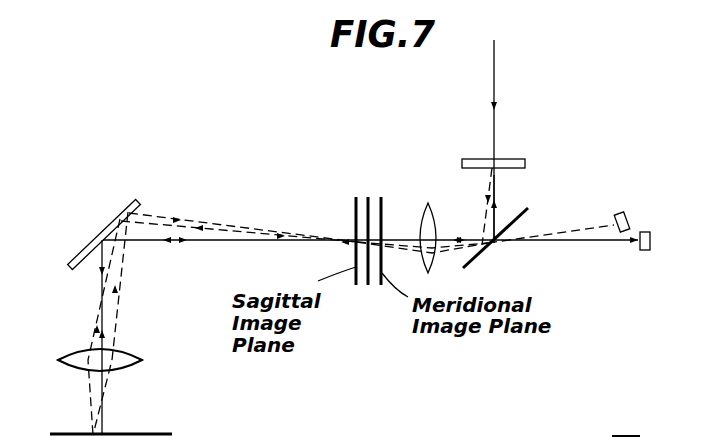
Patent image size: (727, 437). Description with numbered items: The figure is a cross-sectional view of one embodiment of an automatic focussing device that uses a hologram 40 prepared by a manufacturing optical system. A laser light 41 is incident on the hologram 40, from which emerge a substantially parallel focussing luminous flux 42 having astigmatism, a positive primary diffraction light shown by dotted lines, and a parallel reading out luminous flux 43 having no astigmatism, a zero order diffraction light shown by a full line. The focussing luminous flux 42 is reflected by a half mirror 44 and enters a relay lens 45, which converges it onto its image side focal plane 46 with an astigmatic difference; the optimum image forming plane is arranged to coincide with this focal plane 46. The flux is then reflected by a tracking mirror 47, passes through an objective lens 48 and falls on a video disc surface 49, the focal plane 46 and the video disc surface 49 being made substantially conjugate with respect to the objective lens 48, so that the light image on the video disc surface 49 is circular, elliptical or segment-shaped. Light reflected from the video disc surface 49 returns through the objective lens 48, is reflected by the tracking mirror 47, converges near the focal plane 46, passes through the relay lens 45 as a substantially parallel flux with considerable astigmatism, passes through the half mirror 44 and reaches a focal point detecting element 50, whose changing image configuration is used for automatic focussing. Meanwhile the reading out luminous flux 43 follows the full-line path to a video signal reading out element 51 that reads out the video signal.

The hologram 40 is at (521, 158).
The laser light 41 is at (495, 72).
The focussing luminous flux 42 is at (483, 222).
The reading out luminous flux 43 is at (497, 197).
The half mirror 44 is at (478, 259).
The relay lens 45 is at (437, 203).
The image side focal plane 46 is at (368, 286).
The tracking mirror 47 is at (132, 203).
The objective lens 48 is at (131, 357).
The video disc surface 49 is at (153, 433).
The focal point detecting element 50 is at (627, 212).
The video signal reading out element 51 is at (644, 251).